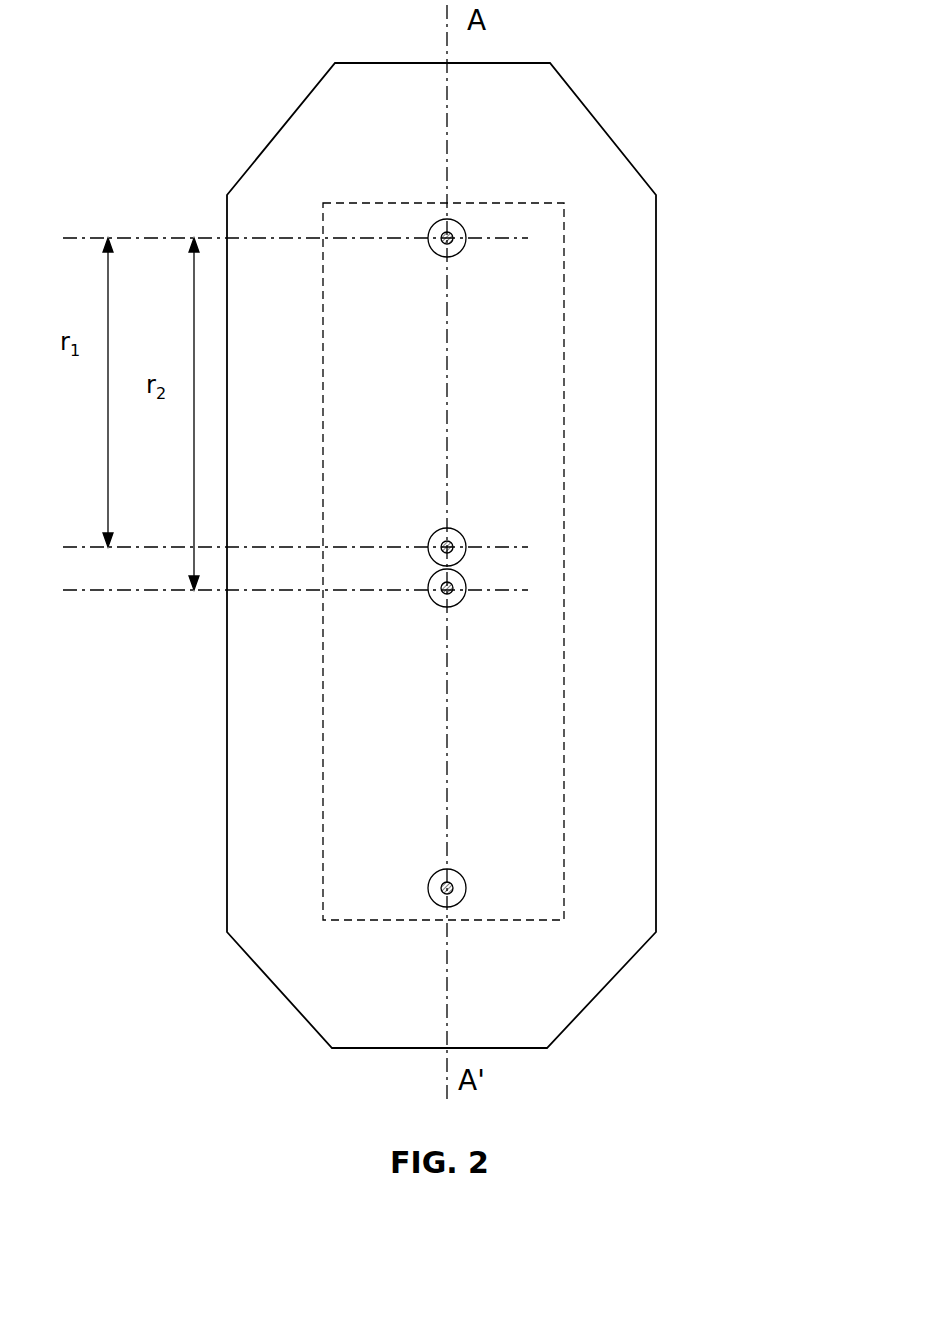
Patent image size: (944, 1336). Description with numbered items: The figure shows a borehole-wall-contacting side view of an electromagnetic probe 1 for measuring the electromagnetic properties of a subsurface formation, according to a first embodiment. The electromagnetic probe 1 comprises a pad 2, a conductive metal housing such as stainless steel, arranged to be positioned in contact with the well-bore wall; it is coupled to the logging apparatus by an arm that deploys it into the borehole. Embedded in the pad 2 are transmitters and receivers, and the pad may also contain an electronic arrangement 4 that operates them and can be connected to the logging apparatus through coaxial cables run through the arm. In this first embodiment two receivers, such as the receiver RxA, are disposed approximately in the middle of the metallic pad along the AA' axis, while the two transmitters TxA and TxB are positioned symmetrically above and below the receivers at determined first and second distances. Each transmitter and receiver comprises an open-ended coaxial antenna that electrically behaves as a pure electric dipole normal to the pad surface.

The electromagnetic probe 1 is at (186, 106).
The pad 2 is at (222, 934).
The electronic arrangement 4 is at (312, 752).
The transmitter TxA is at (462, 228).
The receiver RxA is at (462, 535).
The transmitter TxB is at (462, 880).